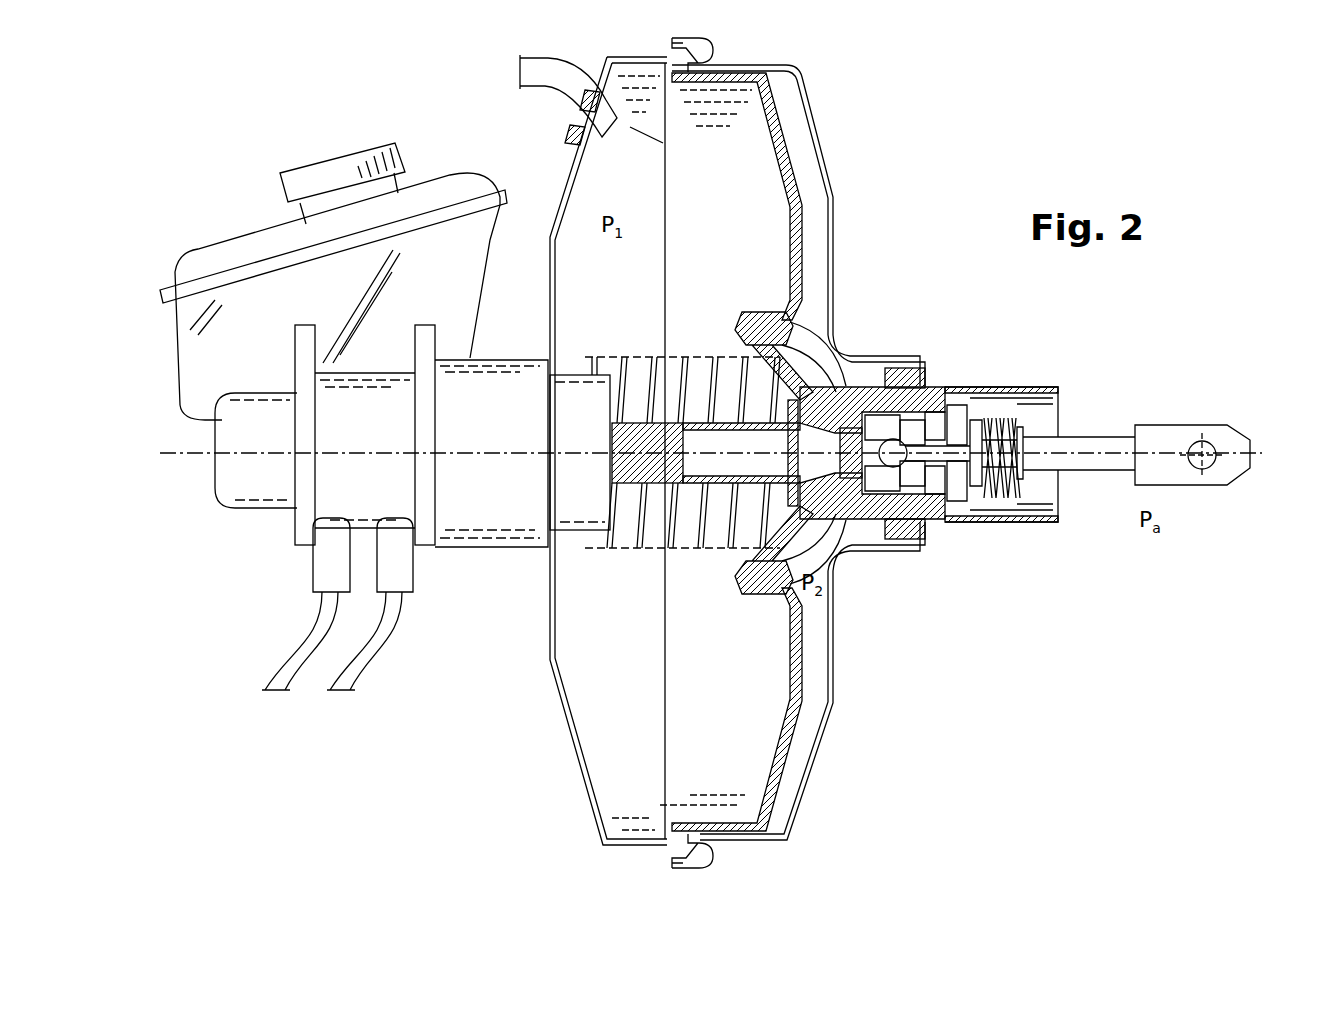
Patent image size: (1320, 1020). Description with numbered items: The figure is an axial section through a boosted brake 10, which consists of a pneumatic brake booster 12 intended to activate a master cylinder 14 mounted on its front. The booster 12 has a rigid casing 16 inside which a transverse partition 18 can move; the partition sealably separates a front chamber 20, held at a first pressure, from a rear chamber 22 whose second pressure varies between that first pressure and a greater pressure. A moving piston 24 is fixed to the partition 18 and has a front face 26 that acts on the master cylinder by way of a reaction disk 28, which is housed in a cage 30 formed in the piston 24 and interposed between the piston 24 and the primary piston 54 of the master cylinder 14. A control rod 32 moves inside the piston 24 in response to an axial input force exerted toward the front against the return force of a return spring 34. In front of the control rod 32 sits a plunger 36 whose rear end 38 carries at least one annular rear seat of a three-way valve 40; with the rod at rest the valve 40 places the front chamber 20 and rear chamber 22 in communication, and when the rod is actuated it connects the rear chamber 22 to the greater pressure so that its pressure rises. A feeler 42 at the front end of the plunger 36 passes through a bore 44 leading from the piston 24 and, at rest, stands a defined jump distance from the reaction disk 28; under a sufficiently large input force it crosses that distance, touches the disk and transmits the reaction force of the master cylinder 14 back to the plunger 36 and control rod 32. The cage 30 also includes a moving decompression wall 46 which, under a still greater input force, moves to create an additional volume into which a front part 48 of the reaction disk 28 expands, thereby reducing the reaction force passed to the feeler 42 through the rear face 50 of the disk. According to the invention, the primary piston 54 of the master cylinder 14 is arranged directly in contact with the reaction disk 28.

The boosted brake 10 is at (915, 192).
The pneumatic brake booster 12 is at (824, 160).
The master cylinder 14 is at (478, 483).
The rigid casing 16 is at (812, 127).
The transverse partition 18 is at (788, 105).
The front chamber 20 is at (597, 190).
The rear chamber 22 is at (818, 650).
The moving piston 24 is at (826, 348).
The front face 26 is at (775, 415).
The reaction disk 28 is at (821, 527).
The cage 30 is at (766, 318).
The control rod 32 is at (1110, 443).
The return spring 34 is at (1017, 417).
The plunger 36 is at (895, 528).
The rear end 38 is at (919, 528).
The three-way valve 40 is at (958, 521).
The feeler 42 is at (861, 521).
The bore 44 is at (919, 390).
The moving decompression wall 46 is at (766, 470).
The front part 48 is at (797, 418).
The rear face 50 is at (846, 372).
The primary piston 54 is at (636, 476).